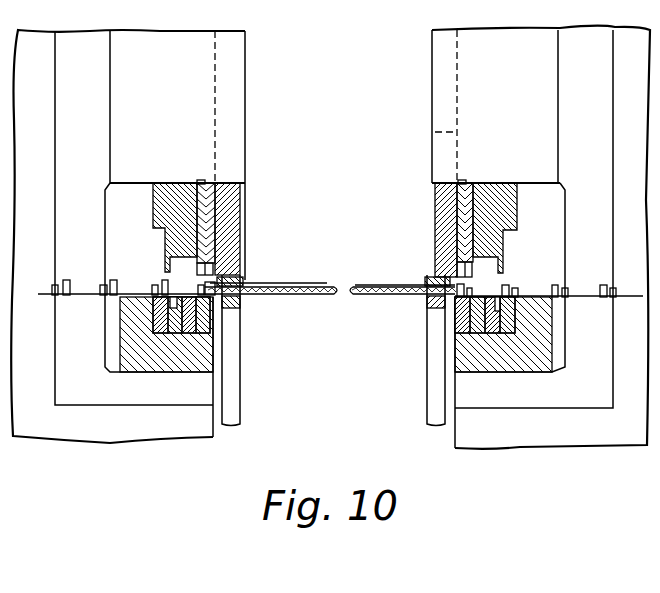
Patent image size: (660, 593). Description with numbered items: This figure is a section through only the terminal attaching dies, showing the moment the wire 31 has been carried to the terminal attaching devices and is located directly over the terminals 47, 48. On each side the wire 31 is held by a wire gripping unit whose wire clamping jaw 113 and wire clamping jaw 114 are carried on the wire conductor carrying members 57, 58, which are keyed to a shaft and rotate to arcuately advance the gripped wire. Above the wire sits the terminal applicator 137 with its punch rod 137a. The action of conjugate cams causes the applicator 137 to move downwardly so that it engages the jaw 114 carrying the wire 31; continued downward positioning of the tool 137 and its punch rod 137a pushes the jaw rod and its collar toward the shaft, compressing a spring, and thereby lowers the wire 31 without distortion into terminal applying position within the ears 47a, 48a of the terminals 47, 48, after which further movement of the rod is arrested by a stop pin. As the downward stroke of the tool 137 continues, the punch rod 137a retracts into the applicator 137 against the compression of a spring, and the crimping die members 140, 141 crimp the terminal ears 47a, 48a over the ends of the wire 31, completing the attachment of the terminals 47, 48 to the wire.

The wire 31 is at (358, 286).
The terminal 47 is at (183, 300).
The terminal ear 47a is at (242, 262).
The terminal 48 is at (483, 300).
The terminal ear 48a is at (458, 277).
The wire conductor carrying member 57 is at (241, 413).
The wire conductor carrying member 58 is at (425, 397).
The wire clamping jaw 113 is at (240, 303).
The wire clamping jaw 114 is at (243, 280).
The terminal applicator 137 is at (420, 177).
The punch rod 137a is at (235, 215).
The crimping die member 140 is at (205, 183).
The crimping die member 141 is at (200, 183).